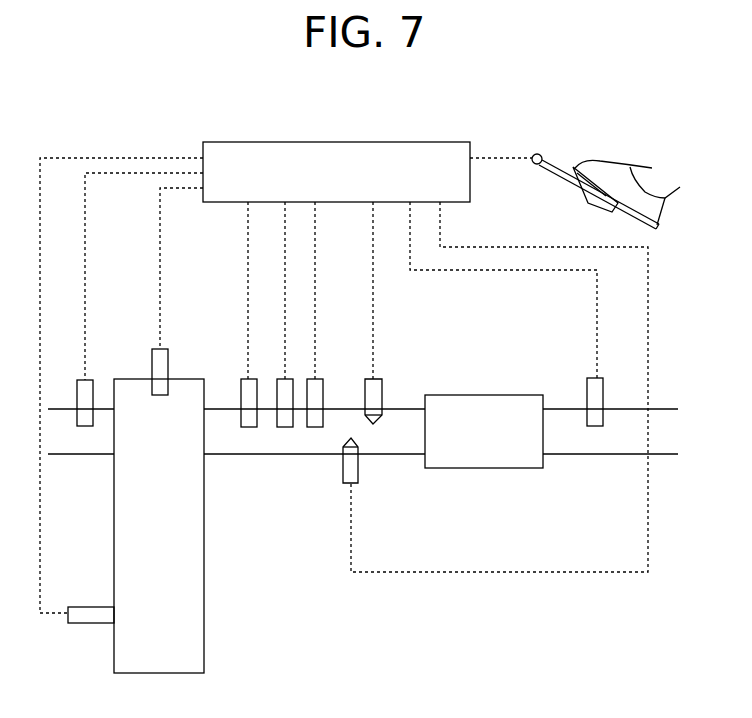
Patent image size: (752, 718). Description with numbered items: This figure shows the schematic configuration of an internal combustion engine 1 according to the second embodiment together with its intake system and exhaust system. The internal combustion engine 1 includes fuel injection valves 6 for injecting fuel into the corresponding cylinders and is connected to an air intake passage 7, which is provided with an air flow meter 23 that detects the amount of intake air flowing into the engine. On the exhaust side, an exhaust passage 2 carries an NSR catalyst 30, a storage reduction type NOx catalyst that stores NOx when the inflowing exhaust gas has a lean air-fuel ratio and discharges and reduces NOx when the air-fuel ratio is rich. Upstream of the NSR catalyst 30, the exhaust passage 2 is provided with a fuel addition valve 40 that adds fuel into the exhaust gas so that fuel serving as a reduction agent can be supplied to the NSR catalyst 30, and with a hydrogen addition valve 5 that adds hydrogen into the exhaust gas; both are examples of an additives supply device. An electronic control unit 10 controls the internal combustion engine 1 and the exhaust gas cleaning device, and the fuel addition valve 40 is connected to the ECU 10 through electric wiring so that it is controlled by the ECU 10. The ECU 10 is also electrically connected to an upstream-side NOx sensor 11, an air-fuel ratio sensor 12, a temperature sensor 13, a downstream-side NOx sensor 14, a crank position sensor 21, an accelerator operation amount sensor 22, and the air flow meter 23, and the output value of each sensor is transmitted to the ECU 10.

The internal combustion engine 1 is at (205, 635).
The exhaust passage 2 is at (305, 454).
The hydrogen addition valve 5 is at (358, 472).
The fuel injection valves 6 is at (152, 364).
The air intake passage 7 is at (82, 455).
The electronic control unit (ECU) 10 is at (470, 142).
The upstream-side NOx sensor 11 is at (241, 390).
The air-fuel ratio sensor 12 is at (280, 428).
The temperature sensor 13 is at (324, 392).
The downstream-side NOx sensor 14 is at (587, 390).
The crank position sensor 21 is at (87, 607).
The accelerator operation amount sensor 22 is at (531, 163).
The air flow meter 23 is at (77, 395).
The NSR catalyst 30 is at (483, 470).
The fuel addition valve 40 is at (382, 385).